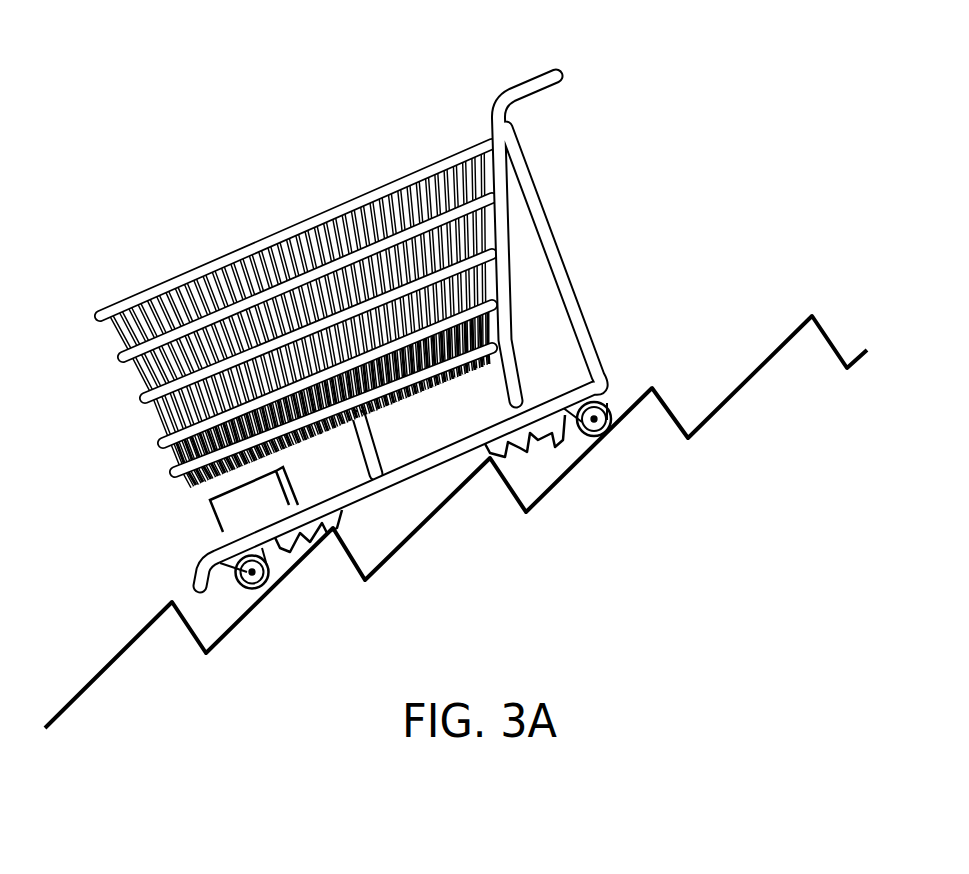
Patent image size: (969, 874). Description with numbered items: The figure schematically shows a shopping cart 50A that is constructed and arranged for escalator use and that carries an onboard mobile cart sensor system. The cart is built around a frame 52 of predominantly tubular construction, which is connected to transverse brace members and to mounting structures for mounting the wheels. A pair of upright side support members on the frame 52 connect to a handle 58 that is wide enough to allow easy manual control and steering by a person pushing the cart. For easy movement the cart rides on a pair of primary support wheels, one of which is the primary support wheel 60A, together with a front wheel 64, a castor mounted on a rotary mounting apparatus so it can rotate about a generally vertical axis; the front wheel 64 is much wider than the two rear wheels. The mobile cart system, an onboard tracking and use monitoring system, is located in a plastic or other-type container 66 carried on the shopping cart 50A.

The shopping cart 50A is at (347, 106).
The frame 52 is at (368, 430).
The handle 58 is at (551, 90).
The primary support wheel 60A is at (592, 438).
The front wheel 64 is at (273, 582).
The container 66 is at (212, 512).